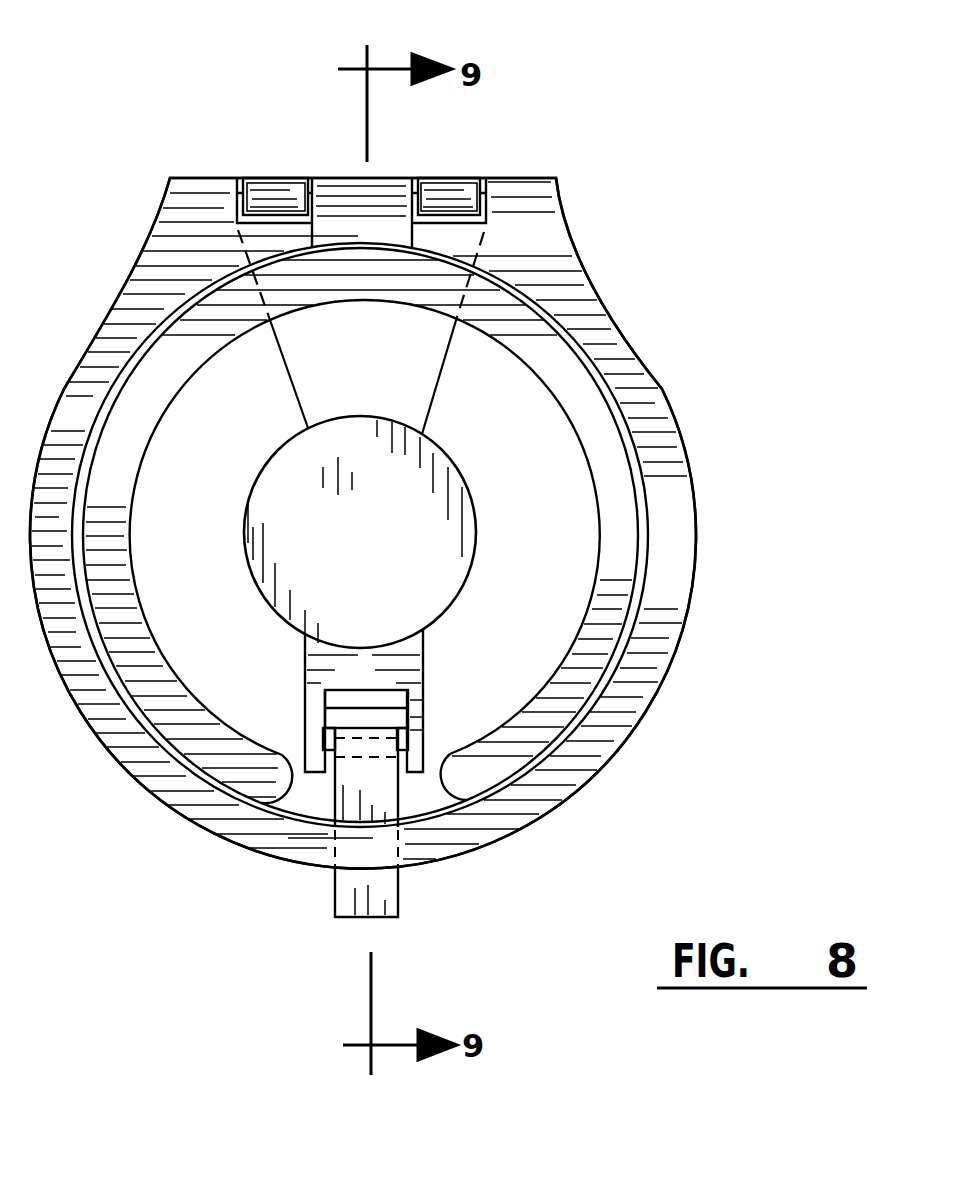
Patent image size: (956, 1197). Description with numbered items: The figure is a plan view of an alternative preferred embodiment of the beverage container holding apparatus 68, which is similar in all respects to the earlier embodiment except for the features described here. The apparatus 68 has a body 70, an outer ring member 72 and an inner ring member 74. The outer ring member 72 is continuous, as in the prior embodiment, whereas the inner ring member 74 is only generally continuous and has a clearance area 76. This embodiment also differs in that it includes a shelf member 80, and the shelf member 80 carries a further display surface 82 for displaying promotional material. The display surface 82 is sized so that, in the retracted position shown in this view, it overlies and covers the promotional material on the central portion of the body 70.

The beverage container holding apparatus 68 is at (188, 869).
The body 70 is at (420, 405).
The outer ring member 72 is at (690, 445).
The inner ring member 74 is at (587, 668).
The clearance area 76 is at (414, 792).
The shelf member 80 is at (460, 607).
The display surface 82 is at (393, 614).